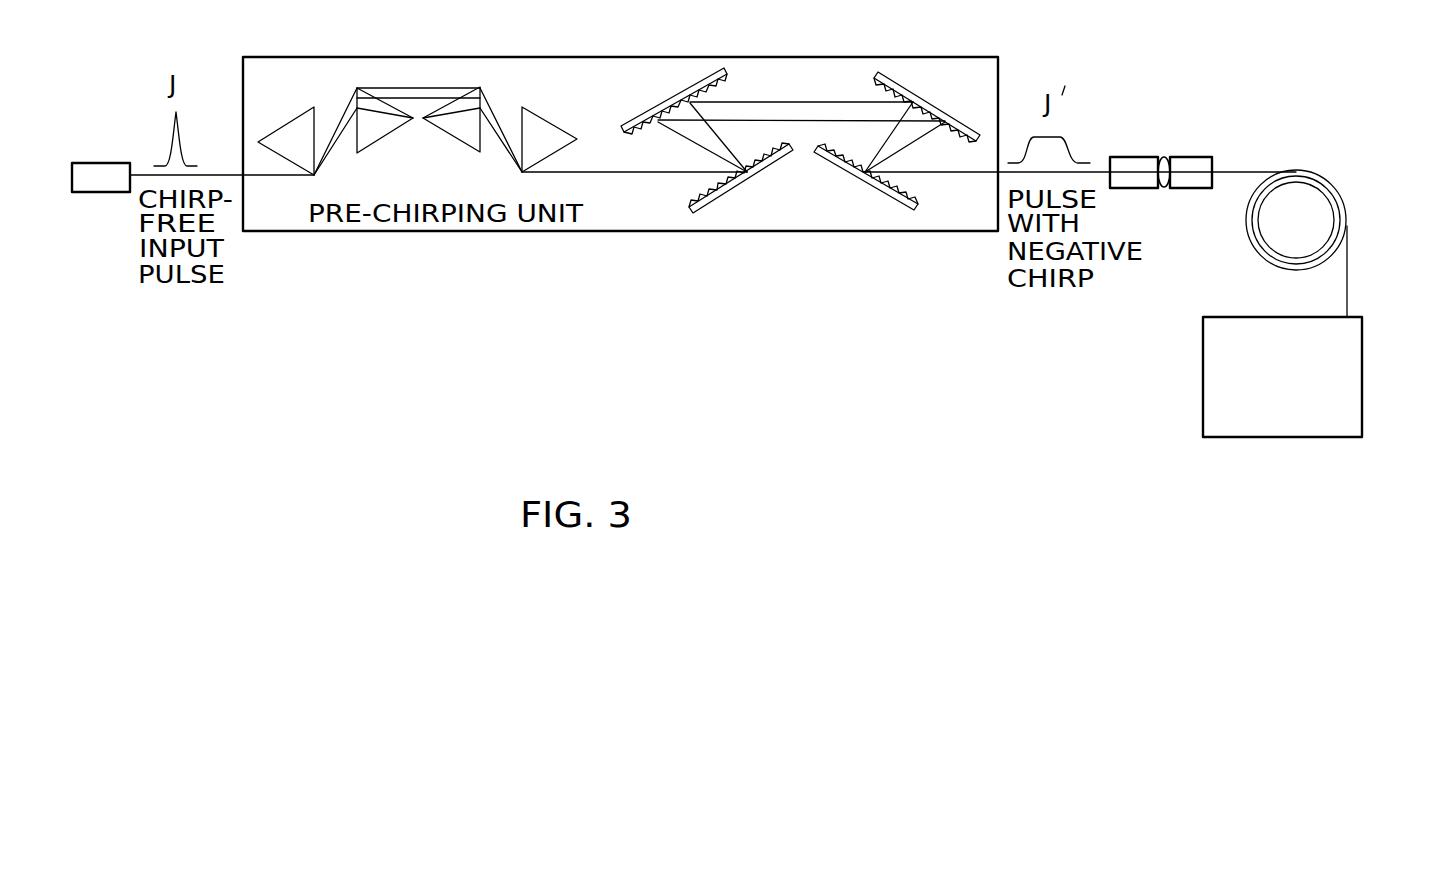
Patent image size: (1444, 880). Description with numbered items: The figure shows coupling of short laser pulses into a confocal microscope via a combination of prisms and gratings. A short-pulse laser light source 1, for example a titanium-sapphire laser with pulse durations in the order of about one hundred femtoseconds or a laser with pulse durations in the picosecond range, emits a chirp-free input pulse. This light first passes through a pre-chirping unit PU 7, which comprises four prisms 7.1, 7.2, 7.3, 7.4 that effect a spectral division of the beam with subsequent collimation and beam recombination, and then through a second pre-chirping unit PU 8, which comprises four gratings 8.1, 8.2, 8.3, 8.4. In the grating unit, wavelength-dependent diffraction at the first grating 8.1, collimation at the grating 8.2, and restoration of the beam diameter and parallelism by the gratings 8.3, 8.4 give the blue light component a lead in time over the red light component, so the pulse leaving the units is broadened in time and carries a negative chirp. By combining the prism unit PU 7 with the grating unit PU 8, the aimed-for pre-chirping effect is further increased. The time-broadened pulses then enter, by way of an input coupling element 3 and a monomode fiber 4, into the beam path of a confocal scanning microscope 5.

The short-pulse laser light source 1 is at (89, 163).
The input coupling element 3 is at (1150, 190).
The monomode fiber 4 is at (1350, 267).
The confocal scanning microscope 5 is at (1363, 388).
The pre-chirping unit PU 7 is at (426, 104).
The prism 7.1 is at (282, 127).
The prism 7.2 is at (390, 100).
The prism 7.3 is at (440, 104).
The prism 7.4 is at (550, 120).
The pre-chirping unit PU 8 is at (800, 173).
The grating 8.1 is at (664, 104).
The grating 8.2 is at (723, 205).
The grating 8.3 is at (898, 207).
The grating 8.4 is at (922, 88).